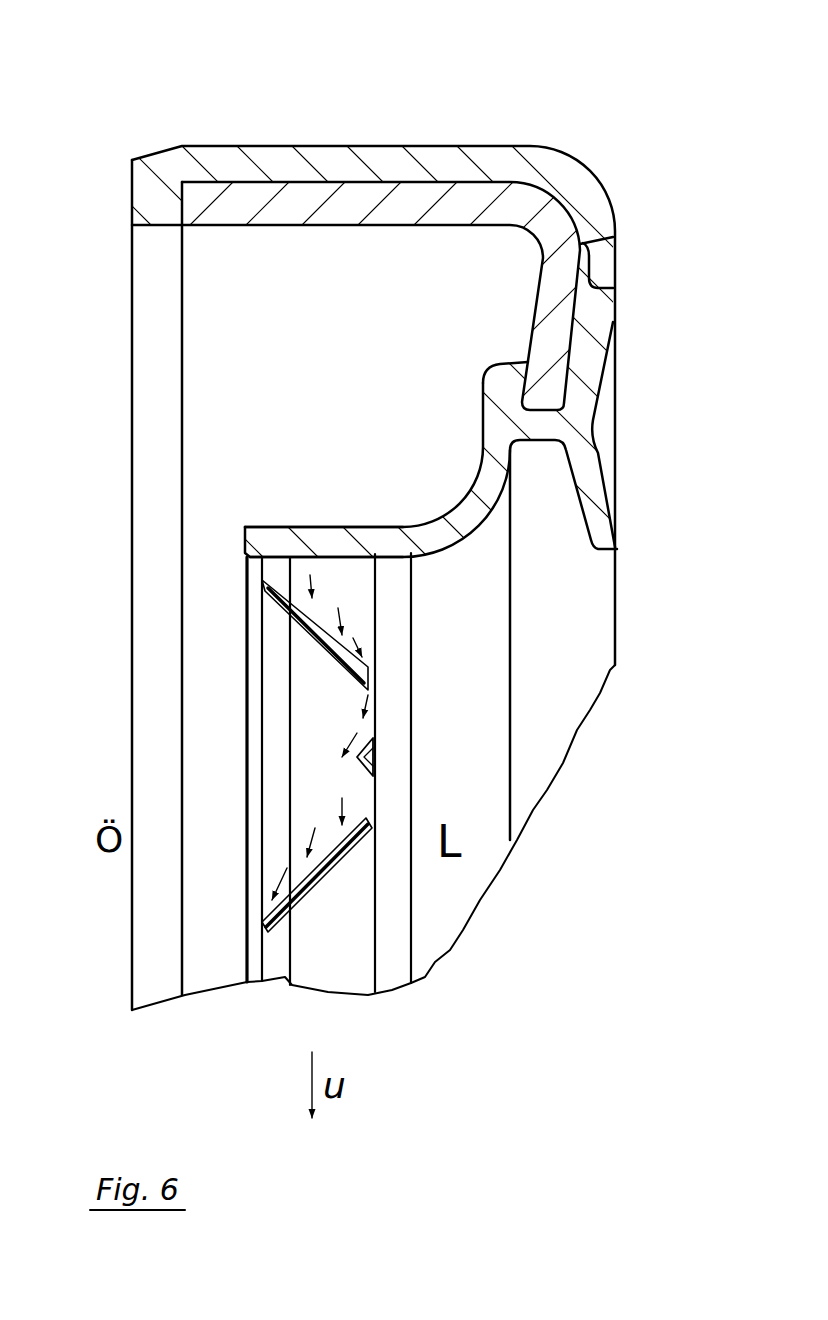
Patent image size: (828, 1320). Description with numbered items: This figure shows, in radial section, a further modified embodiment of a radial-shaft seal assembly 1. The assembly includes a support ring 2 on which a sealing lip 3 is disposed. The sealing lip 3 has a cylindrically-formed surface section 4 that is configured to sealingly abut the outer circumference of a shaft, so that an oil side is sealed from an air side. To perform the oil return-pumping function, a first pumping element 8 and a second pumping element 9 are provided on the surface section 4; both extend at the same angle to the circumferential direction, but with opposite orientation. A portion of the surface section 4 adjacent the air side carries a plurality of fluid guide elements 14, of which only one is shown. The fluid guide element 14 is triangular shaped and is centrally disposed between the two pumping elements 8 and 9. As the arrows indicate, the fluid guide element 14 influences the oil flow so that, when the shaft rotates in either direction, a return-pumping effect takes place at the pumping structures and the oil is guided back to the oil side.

The radial-shaft seal assembly 1 is at (507, 96).
The support ring 2 is at (553, 332).
The sealing lip 3 is at (503, 393).
The cylindrical surface section 4 is at (370, 512).
The pumping element 8 is at (350, 887).
The pumping element 9 is at (317, 665).
The fluid guide element 14 is at (397, 757).